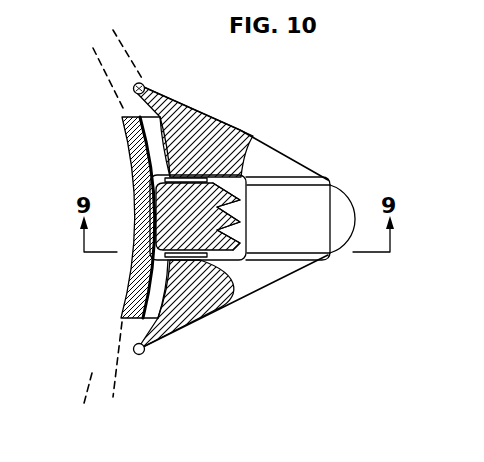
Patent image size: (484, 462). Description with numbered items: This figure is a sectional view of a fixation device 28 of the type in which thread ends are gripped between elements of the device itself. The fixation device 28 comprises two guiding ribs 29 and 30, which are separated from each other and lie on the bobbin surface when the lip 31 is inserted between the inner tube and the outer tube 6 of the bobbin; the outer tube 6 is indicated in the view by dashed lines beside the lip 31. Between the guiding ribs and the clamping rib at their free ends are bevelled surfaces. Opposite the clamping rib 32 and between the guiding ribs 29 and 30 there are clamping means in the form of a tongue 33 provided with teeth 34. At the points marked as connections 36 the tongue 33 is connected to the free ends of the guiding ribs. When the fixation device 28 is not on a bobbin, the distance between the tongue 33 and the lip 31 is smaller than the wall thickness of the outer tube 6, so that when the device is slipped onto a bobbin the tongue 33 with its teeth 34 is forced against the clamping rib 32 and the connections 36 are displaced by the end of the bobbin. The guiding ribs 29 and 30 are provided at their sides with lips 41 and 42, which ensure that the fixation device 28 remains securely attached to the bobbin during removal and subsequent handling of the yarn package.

The outer tube 6 is at (89, 399).
The fixation device 28 is at (318, 278).
The guiding rib 29 is at (197, 118).
The guiding rib 30 is at (206, 314).
The lip 31 is at (128, 141).
The clamping rib 32 is at (298, 195).
The tongue 33 is at (144, 272).
The teeth 34 is at (241, 181).
The connections 36 is at (213, 179).
The lip 41 is at (170, 68).
The lip 42 is at (146, 350).